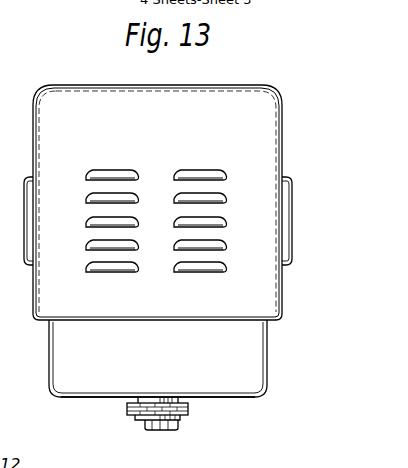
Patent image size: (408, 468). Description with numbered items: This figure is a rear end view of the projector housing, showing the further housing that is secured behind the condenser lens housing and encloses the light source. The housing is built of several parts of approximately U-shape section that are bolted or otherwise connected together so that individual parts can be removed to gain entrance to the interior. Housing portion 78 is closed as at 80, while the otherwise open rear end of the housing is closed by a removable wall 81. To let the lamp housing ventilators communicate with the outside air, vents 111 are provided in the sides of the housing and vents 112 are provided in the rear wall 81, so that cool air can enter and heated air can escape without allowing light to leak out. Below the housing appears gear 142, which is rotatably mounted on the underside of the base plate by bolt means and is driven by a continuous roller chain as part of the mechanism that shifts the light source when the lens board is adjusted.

The housing portion 78 is at (268, 352).
The closed end of housing portion 80 is at (232, 389).
The removable wall 81 is at (270, 121).
The vents 111 is at (288, 228).
The vents 112 is at (176, 196).
The gear 142 is at (176, 417).